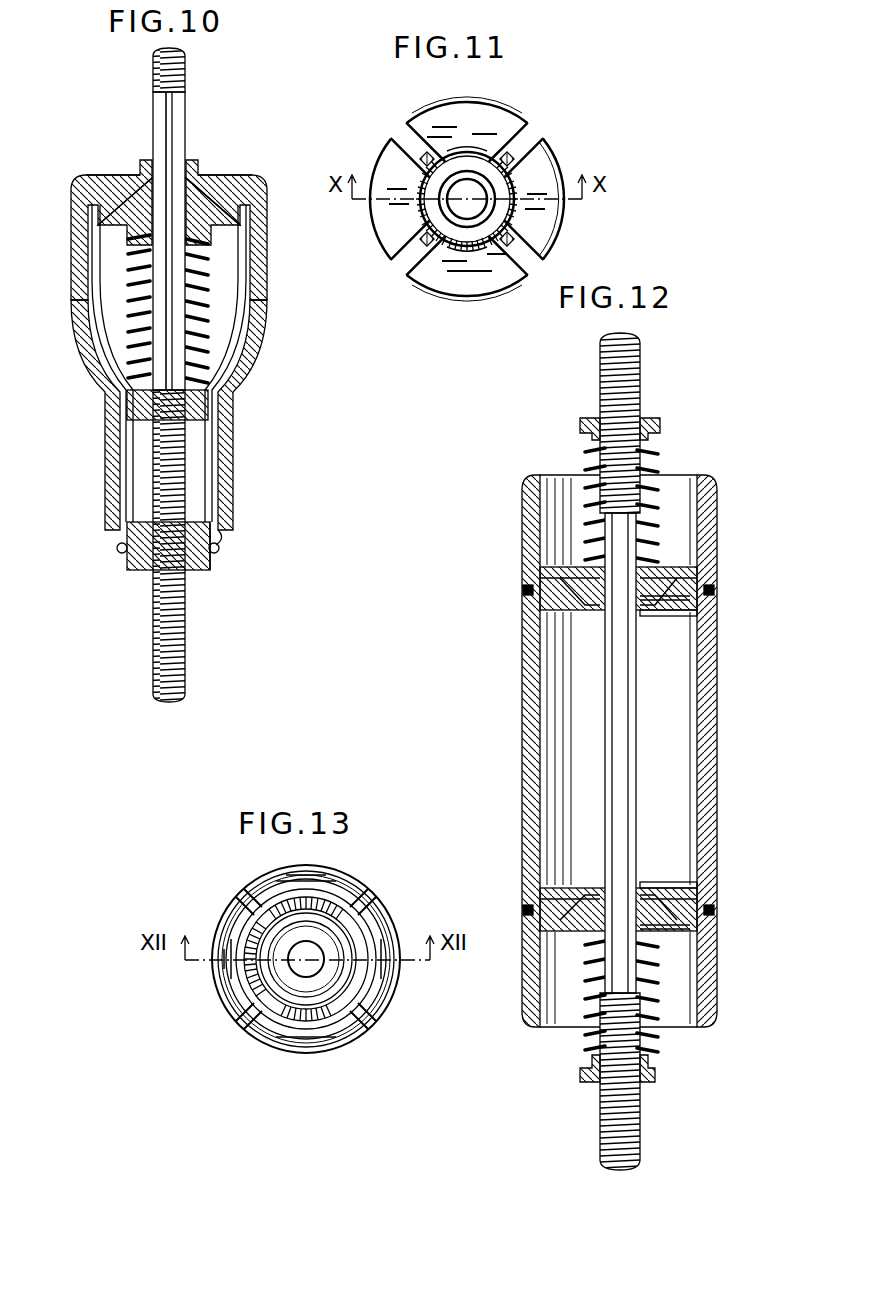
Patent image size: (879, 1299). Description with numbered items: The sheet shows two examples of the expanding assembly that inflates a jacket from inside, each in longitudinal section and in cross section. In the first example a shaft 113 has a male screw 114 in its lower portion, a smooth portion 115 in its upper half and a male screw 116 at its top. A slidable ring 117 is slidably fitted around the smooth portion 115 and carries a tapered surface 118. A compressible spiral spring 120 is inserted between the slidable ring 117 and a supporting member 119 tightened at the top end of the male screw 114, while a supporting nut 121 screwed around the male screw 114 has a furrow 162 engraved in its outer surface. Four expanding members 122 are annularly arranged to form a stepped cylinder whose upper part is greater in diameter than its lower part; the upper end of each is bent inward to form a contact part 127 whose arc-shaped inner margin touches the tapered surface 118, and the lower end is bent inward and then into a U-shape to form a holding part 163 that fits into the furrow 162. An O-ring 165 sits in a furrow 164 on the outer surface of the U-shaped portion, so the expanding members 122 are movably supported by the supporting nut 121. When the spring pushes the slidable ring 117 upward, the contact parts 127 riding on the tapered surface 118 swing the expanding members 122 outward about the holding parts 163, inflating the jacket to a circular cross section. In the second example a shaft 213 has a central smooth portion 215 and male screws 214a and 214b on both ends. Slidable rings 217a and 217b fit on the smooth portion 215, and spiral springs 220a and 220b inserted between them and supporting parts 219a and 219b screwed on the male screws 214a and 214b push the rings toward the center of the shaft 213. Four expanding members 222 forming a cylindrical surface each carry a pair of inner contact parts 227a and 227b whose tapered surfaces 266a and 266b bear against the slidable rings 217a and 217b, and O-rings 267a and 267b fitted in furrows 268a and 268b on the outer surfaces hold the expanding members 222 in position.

In FIG. 10, the shaft 113 is at (191, 114).
In FIG. 11, the shaft 113 is at (470, 215).
In FIG. 10, the male screw 114 is at (172, 628).
In FIG. 10, the smooth portion 115 is at (164, 125).
In FIG. 10, the male screw 116 is at (180, 68).
In FIG. 10, the slidable ring 117 is at (222, 212).
In FIG. 11, the slidable ring 117 is at (420, 215).
In FIG. 10, the tapered surface 118 is at (205, 195).
In FIG. 10, the supporting member 119 is at (200, 405).
In FIG. 10, the compressible spiral spring 120 is at (215, 318).
In FIG. 10, the supporting nut 121 is at (128, 568).
In FIG. 10, the expanding members 122 is at (88, 297).
In FIG. 11, the expanding members 122 is at (433, 118).
In FIG. 10, the contact part 127 is at (112, 188).
In FIG. 11, the contact part 127 is at (498, 150).
In FIG. 10, the furrow 162 is at (200, 567).
In FIG. 10, the holding part 163 is at (218, 533).
In FIG. 10, the furrow 164 is at (217, 550).
In FIG. 10, the O-ring 165 is at (118, 547).
In FIG. 12, the shaft 213 is at (630, 751).
In FIG. 13, the shaft 213 is at (312, 970).
In FIG. 12, the male screw 214a is at (636, 375).
In FIG. 12, the male screw 214b is at (630, 1125).
In FIG. 12, the smooth portion 215 is at (632, 686).
In FIG. 12, the slidable ring 217a is at (655, 570).
In FIG. 13, the slidable ring 217a is at (340, 930).
In FIG. 12, the slidable ring 217b is at (660, 920).
In FIG. 12, the supporting part 219a is at (655, 425).
In FIG. 13, the supporting part 219a is at (325, 905).
In FIG. 12, the supporting part 219b is at (655, 1075).
In FIG. 12, the spiral spring 220a is at (652, 470).
In FIG. 12, the spiral spring 220b is at (655, 1000).
In FIG. 12, the expanding members 222 is at (532, 736).
In FIG. 13, the expanding members 222 is at (283, 875).
In FIG. 12, the contact part 227a is at (670, 615).
In FIG. 13, the contact part 227a is at (345, 990).
In FIG. 12, the contact part 227b is at (672, 882).
In FIG. 12, the tapered surface 266a is at (660, 585).
In FIG. 12, the tapered surface 266b is at (670, 935).
In FIG. 12, the O-ring 267a is at (714, 592).
In FIG. 13, the O-ring 267a is at (245, 1022).
In FIG. 12, the O-ring 267b is at (714, 910).
In FIG. 12, the furrow 268a is at (700, 588).
In FIG. 12, the furrow 268b is at (700, 928).